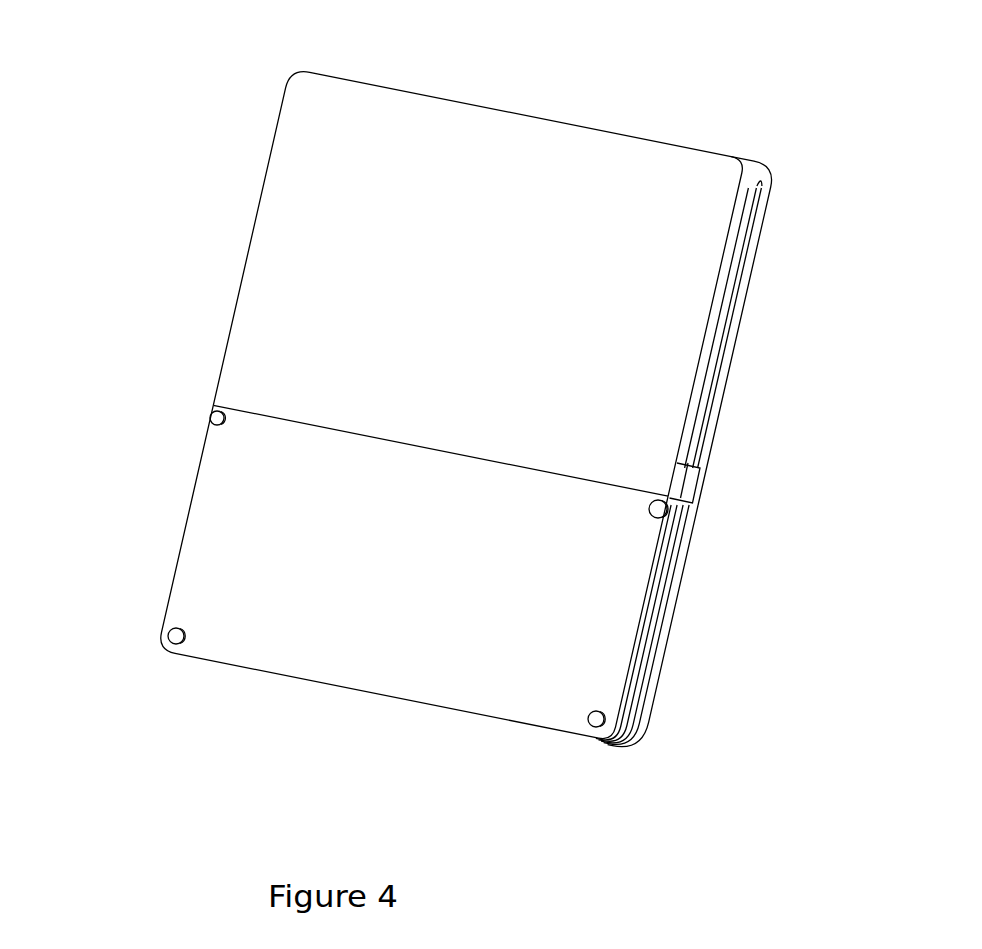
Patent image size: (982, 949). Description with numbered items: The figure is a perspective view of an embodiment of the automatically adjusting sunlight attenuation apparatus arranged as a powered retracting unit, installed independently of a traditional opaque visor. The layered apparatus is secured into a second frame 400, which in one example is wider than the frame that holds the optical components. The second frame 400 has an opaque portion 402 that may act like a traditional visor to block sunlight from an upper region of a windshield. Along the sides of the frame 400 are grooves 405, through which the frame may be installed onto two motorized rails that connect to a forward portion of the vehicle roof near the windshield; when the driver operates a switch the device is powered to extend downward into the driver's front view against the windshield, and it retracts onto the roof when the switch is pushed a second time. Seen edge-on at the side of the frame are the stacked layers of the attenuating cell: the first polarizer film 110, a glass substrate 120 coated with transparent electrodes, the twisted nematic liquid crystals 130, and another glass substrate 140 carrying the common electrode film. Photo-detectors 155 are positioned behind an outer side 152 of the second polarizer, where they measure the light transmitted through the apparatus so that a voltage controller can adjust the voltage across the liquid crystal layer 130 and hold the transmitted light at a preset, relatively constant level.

The second frame 400 is at (523, 110).
The opaque portion 402 is at (326, 242).
The grooves 405 is at (735, 277).
The outer side 152 is at (248, 638).
The photo-detectors 155 is at (175, 630).
The first polarizer film 110 is at (692, 545).
The glass substrate 120 is at (678, 563).
The twisted nematic liquid crystals 130 is at (665, 590).
The glass substrate 140 is at (655, 612).